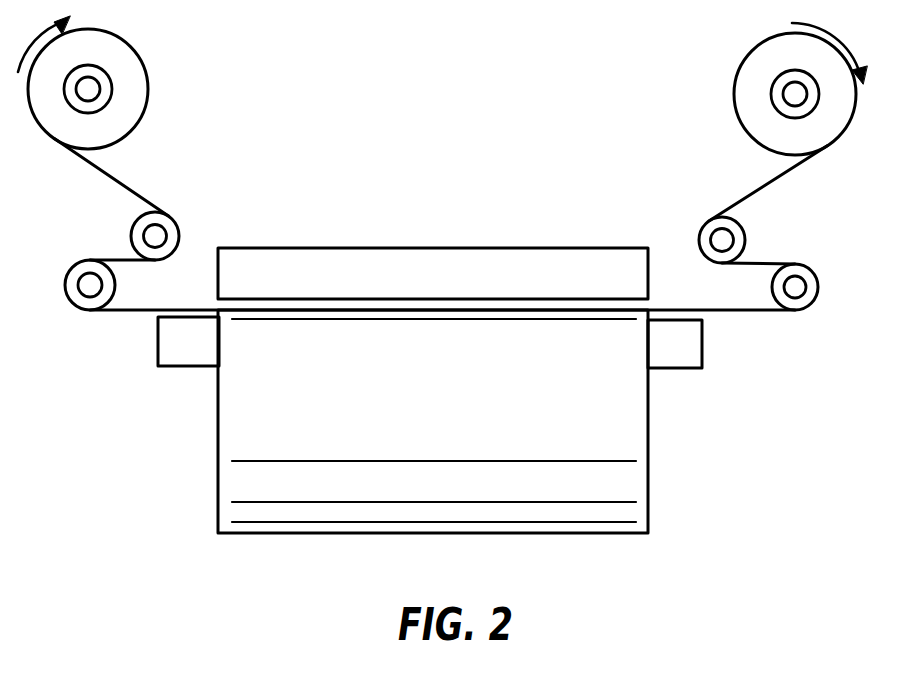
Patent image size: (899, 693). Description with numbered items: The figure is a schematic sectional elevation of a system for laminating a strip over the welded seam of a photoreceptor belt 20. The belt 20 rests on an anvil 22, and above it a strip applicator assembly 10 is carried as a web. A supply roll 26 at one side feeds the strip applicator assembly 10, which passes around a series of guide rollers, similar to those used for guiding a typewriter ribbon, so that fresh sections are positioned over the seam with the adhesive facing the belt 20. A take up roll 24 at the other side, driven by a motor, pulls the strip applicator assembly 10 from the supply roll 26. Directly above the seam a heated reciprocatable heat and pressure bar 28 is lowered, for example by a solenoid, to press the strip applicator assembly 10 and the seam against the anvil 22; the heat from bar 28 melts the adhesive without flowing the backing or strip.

The strip applicator assembly 10 is at (758, 190).
The photoreceptor belt 20 is at (648, 473).
The anvil 22 is at (702, 357).
The take up roll 24 is at (147, 72).
The supply roll 26 is at (737, 93).
The heat and pressure bar 28 is at (367, 247).